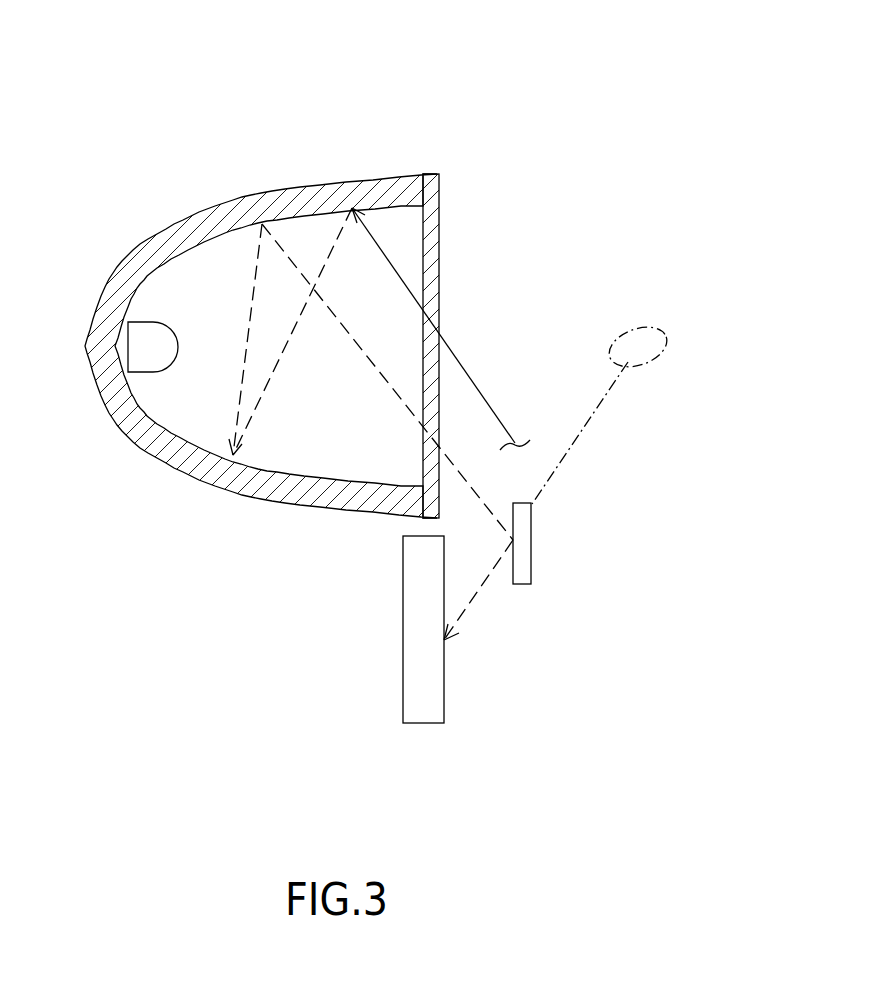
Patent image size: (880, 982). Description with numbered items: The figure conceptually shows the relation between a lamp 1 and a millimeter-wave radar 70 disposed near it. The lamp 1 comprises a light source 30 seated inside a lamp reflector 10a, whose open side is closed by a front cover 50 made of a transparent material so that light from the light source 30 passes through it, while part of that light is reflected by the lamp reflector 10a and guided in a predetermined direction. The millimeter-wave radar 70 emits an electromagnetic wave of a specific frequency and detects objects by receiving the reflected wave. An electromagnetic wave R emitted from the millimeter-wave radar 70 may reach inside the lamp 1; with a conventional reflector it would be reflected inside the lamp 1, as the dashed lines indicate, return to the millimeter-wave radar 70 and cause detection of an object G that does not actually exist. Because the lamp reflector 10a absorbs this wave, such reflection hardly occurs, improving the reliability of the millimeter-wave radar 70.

The lamp 1 is at (540, 107).
The lamp reflector 10a is at (302, 190).
The front cover 50 is at (439, 250).
The light source 30 is at (150, 357).
The millimeter-wave radar 70 is at (428, 695).
The electromagnetic wave R is at (441, 329).
The object G is at (660, 322).